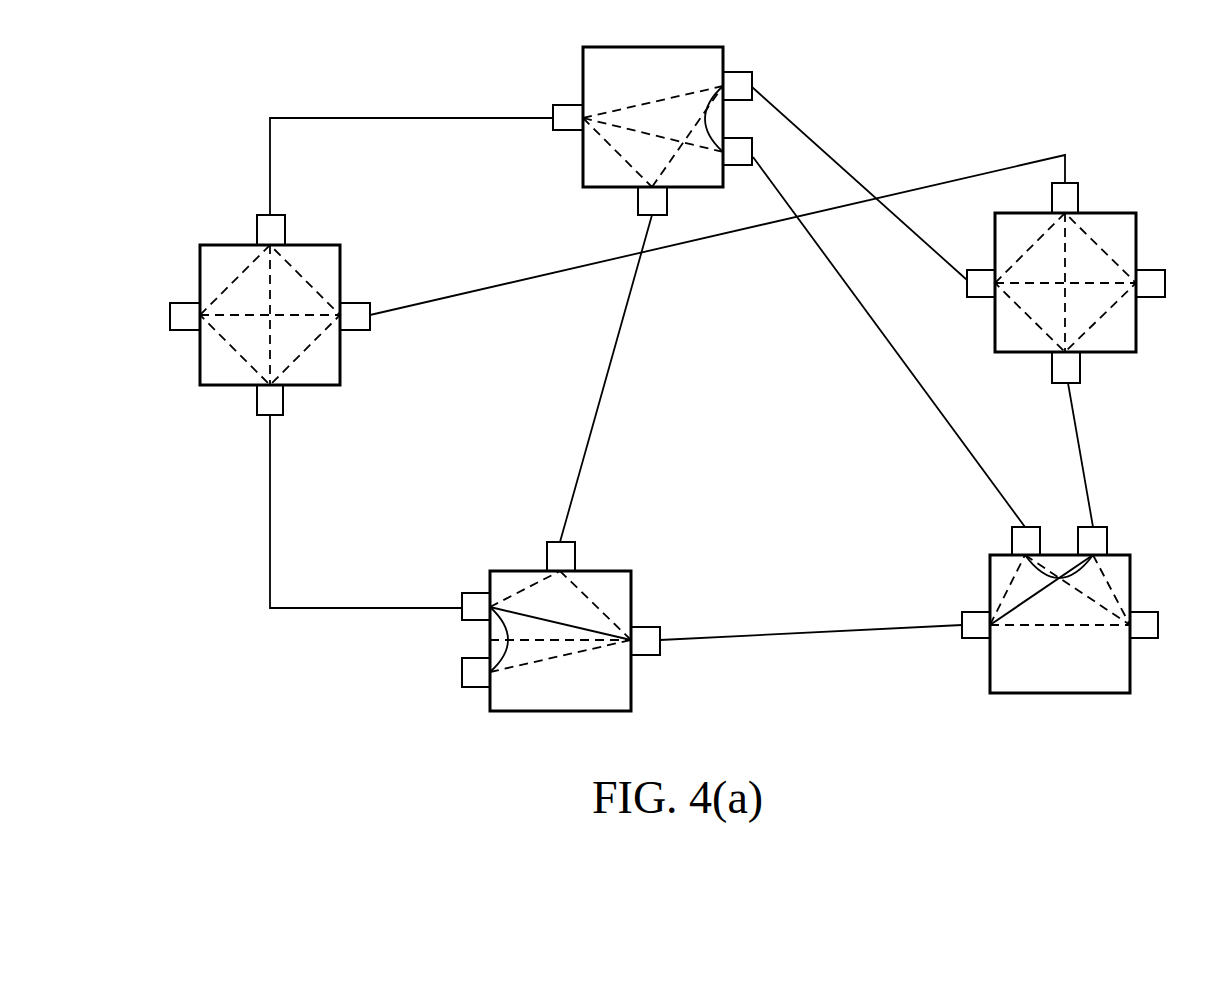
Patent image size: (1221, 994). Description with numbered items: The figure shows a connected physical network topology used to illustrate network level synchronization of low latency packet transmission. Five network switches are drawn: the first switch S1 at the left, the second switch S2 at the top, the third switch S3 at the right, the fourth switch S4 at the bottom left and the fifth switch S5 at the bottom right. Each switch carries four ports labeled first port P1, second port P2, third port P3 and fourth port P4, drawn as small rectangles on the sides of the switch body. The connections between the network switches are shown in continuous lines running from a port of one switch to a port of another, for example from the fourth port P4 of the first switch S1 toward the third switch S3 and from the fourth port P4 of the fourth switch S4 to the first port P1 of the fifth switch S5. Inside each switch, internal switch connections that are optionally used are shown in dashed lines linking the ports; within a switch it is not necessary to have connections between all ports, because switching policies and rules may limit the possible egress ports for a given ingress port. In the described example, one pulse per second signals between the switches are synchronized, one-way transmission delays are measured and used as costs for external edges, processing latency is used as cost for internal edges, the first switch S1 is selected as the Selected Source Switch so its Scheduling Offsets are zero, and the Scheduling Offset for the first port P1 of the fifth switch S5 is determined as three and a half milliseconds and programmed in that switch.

The Switch 1 S1 is at (257, 330).
The Switch 2 S2 is at (644, 134).
The Switch 3 S3 is at (1050, 302).
The Switch 4 S4 is at (550, 659).
The Switch 5 S5 is at (1041, 639).
The Port 1 P1 is at (582, 396).
The Port 2 P2 is at (669, 403).
The Port 3 P3 is at (717, 353).
The Port 4 P4 is at (769, 376).